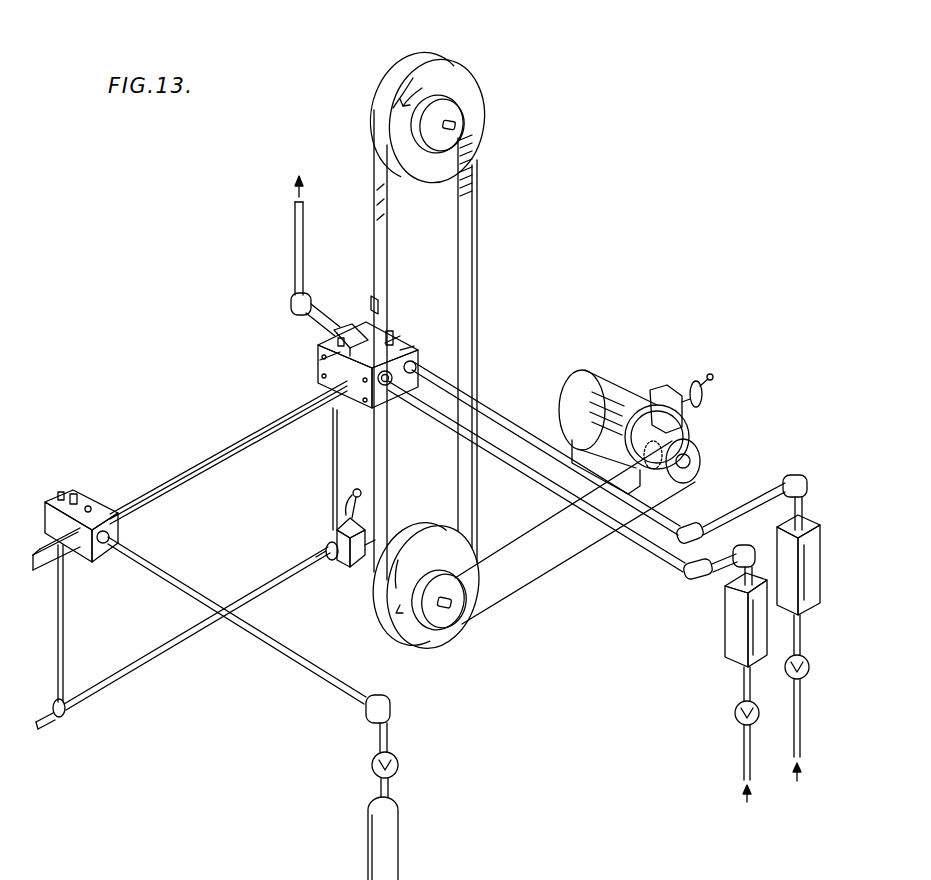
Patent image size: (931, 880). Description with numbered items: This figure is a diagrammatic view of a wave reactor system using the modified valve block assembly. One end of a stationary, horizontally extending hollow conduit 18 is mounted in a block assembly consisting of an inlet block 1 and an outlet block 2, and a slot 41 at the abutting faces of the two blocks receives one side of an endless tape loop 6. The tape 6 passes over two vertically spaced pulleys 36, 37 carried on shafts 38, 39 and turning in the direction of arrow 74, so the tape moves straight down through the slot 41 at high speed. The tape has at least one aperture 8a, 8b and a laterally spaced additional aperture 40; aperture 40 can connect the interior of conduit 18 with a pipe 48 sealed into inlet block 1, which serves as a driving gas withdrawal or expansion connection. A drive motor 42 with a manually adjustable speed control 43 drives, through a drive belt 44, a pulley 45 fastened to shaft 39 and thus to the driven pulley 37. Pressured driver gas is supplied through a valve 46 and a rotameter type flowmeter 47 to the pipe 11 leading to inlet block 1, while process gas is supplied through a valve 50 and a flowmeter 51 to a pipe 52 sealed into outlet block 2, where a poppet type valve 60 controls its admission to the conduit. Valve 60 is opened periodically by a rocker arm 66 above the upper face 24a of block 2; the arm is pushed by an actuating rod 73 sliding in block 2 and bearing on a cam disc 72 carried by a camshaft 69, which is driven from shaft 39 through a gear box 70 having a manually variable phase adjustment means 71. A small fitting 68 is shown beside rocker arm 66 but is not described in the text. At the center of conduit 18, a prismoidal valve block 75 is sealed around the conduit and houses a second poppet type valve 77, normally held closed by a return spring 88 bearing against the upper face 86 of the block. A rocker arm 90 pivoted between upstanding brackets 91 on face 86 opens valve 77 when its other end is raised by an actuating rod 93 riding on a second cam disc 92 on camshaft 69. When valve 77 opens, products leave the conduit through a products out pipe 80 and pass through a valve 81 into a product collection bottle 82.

The inlet block 1 is at (406, 348).
The outlet block 2 is at (392, 398).
The tape 6 is at (373, 170).
The aperture 8a is at (390, 335).
The aperture 8b is at (51, 566).
The pipe 11 is at (488, 406).
The hollow conduit 18 is at (250, 438).
The upper face 24a is at (322, 352).
The pulley 36 is at (470, 86).
The pulley 37 is at (406, 645).
The shaft 38 is at (455, 131).
The shaft 39 is at (458, 604).
The aperture 40 is at (374, 298).
The slot 41 is at (400, 344).
The drive motor 42 is at (596, 378).
The speed control 43 is at (668, 388).
The drive belt 44 is at (565, 558).
The pulley 45 is at (447, 618).
The valve 46 is at (808, 662).
The flowmeter 47 is at (806, 525).
The pipe 48 is at (312, 326).
The valve 50 is at (735, 713).
The flowmeter 51 is at (730, 636).
The pipe 52 is at (530, 474).
The poppet-type valve 60 is at (344, 372).
The rocker arm 66 is at (348, 328).
The clamp 68 is at (334, 342).
The camshaft 69 is at (178, 656).
The gear box 70 is at (336, 563).
The phase adjustment means 71 is at (355, 490).
The cam disc 72 is at (334, 548).
The actuating rod 73 is at (332, 458).
The arrow 74 is at (435, 86).
The valve block 75 is at (100, 562).
The poppet-type valve 77 is at (62, 520).
The products out pipe 80 is at (208, 576).
The valve 81 is at (374, 755).
The product collection bottle 82 is at (398, 822).
The upper face 86 is at (118, 520).
The return spring 88 is at (92, 508).
The rocker arm 90 is at (78, 500).
The upstanding brackets 91 is at (66, 494).
The cam disc 92 is at (58, 718).
The actuating rod 93 is at (64, 635).